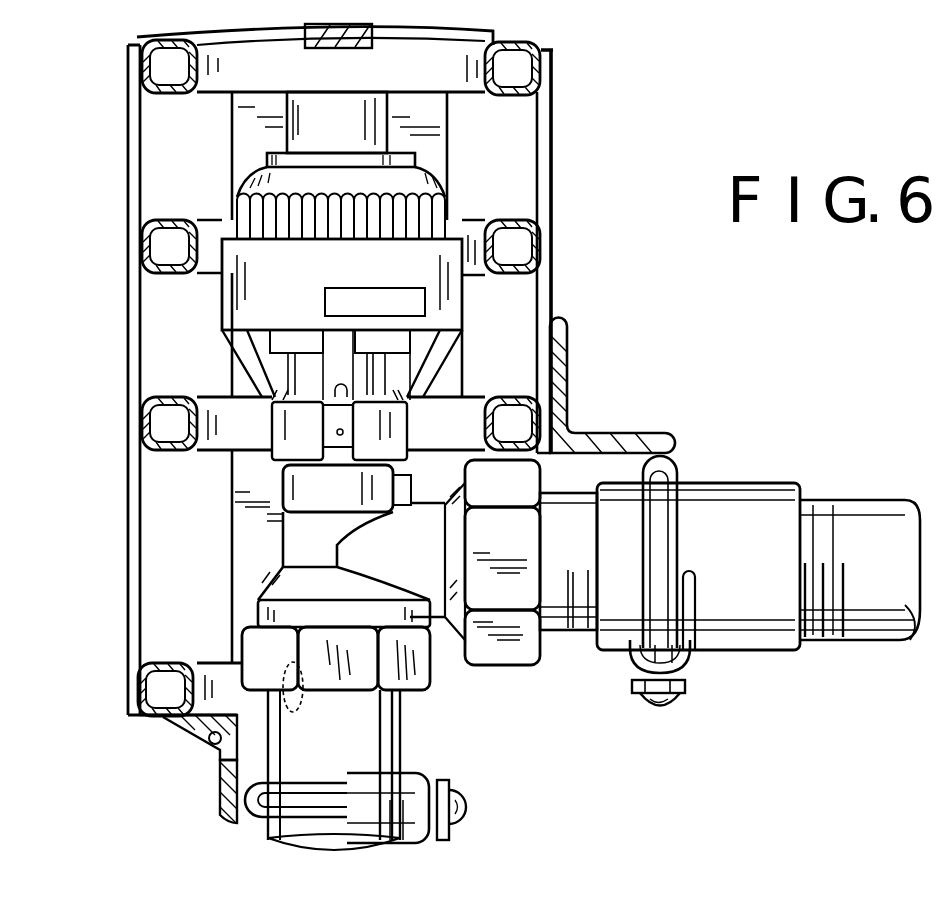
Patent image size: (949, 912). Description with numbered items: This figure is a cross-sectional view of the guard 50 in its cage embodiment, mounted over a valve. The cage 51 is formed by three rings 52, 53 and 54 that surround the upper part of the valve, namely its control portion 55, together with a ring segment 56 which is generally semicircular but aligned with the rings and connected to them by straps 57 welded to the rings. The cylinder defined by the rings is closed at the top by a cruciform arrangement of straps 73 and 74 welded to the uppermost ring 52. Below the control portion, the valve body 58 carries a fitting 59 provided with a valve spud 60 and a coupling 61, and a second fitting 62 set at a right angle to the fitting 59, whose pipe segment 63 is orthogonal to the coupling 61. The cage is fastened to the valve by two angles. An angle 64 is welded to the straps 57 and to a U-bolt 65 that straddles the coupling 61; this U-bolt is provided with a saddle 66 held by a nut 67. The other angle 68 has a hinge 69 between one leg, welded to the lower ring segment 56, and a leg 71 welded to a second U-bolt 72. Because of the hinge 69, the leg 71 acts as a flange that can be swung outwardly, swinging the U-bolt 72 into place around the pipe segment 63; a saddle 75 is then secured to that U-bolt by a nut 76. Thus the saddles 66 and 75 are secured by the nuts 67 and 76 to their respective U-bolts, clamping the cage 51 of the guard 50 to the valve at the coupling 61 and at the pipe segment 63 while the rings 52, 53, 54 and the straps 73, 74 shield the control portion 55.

The guard 50 is at (569, 165).
The cage 51 is at (127, 112).
The ring 52 is at (137, 35).
The ring 53 is at (167, 283).
The ring 54 is at (177, 440).
The control portion 55 is at (463, 297).
The ring segment 56 is at (147, 713).
The straps 57 is at (247, 563).
The valve body 58 is at (300, 537).
The fitting 59 is at (490, 640).
The valve spud 60 is at (552, 625).
The coupling 61 is at (755, 513).
The fitting 62 is at (253, 650).
The pipe segment 63 is at (380, 733).
The angle 64 is at (563, 370).
The U-bolt 65 is at (652, 537).
The saddle 66 is at (693, 663).
The nut 67 is at (660, 707).
The angle 68 is at (209, 738).
The hinge 69 is at (210, 741).
The leg 71 is at (293, 740).
The U-bolt 72 is at (267, 760).
The strap 73 is at (438, 35).
The strap 74 is at (250, 40).
The saddle 75 is at (423, 773).
The nut 76 is at (463, 803).